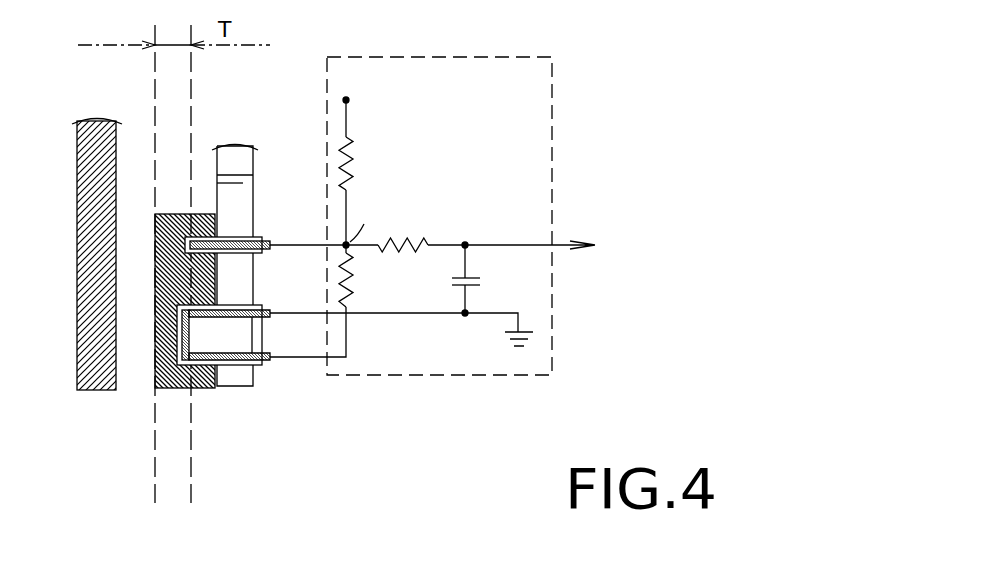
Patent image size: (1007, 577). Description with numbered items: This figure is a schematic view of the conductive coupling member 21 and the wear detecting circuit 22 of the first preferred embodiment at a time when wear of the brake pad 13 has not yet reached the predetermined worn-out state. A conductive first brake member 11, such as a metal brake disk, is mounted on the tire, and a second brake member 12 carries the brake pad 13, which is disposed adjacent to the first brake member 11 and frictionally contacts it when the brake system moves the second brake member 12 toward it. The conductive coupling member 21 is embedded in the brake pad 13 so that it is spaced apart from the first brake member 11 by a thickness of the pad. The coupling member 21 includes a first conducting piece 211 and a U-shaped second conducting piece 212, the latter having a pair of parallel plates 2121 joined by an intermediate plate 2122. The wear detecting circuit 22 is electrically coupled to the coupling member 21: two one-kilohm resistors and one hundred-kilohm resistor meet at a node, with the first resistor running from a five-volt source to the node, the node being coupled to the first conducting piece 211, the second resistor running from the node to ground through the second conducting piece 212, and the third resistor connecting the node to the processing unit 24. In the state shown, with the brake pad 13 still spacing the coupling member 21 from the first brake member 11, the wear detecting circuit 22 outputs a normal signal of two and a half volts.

The first brake member 11 is at (90, 200).
The second brake member 12 is at (240, 167).
The brake pad 13 is at (165, 214).
The conductive coupling member 21 is at (228, 311).
The first conducting piece 211 is at (240, 244).
The second conducting piece 212 is at (228, 361).
The parallel plates 2121 is at (229, 307).
The intermediate plate 2122 is at (182, 335).
The wear detecting circuit 22 is at (540, 130).
The processing unit 24 is at (728, 245).